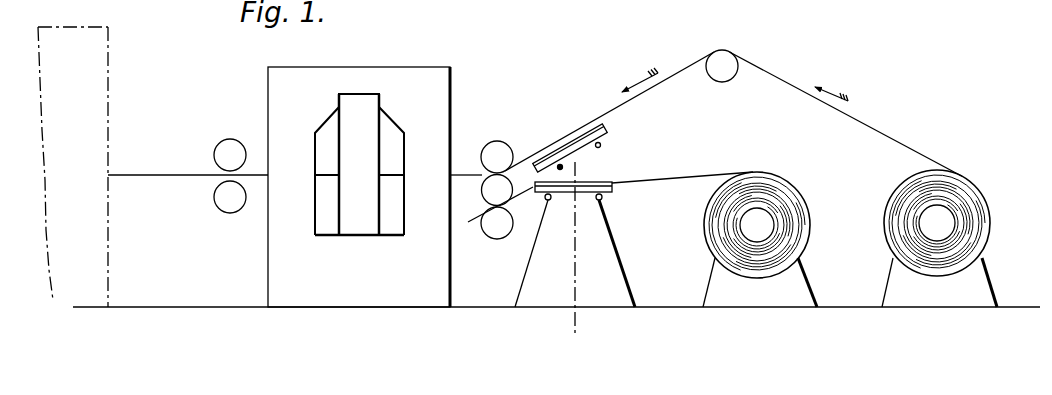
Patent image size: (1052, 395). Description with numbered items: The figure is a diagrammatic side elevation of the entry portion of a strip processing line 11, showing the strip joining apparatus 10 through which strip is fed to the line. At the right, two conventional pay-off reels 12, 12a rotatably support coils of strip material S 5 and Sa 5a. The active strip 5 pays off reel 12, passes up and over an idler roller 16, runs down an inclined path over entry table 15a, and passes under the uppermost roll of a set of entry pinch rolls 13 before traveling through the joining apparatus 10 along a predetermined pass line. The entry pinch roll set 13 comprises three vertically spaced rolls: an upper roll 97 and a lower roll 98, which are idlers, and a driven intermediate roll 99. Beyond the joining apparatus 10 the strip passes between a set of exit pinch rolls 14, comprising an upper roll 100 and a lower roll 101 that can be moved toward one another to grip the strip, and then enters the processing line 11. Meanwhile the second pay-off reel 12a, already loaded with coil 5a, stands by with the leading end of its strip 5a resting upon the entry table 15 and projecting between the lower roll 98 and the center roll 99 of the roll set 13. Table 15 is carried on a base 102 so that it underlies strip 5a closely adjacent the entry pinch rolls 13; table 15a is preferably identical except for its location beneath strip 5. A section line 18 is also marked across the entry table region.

The strip 5 is at (893, 137).
The strip 5a is at (692, 178).
The strip joining apparatus 10 is at (418, 58).
The strip processing line 11 is at (113, 76).
The pay-off reel 12 is at (975, 275).
The pay-off reel 12a is at (794, 273).
The entry pinch rolls 13 is at (518, 126).
The exit pinch rolls 14 is at (230, 132).
The entry table 15 is at (534, 203).
The entry table 15a is at (608, 130).
The idler roller 16 is at (722, 83).
The section line 18- 18 is at (577, 170).
The upper roll 97 is at (490, 146).
The lower roll 98 is at (495, 233).
The intermediate roll 99 is at (482, 190).
The upper roll 100 is at (214, 155).
The lower roll 101 is at (215, 199).
The base 102 is at (605, 251).